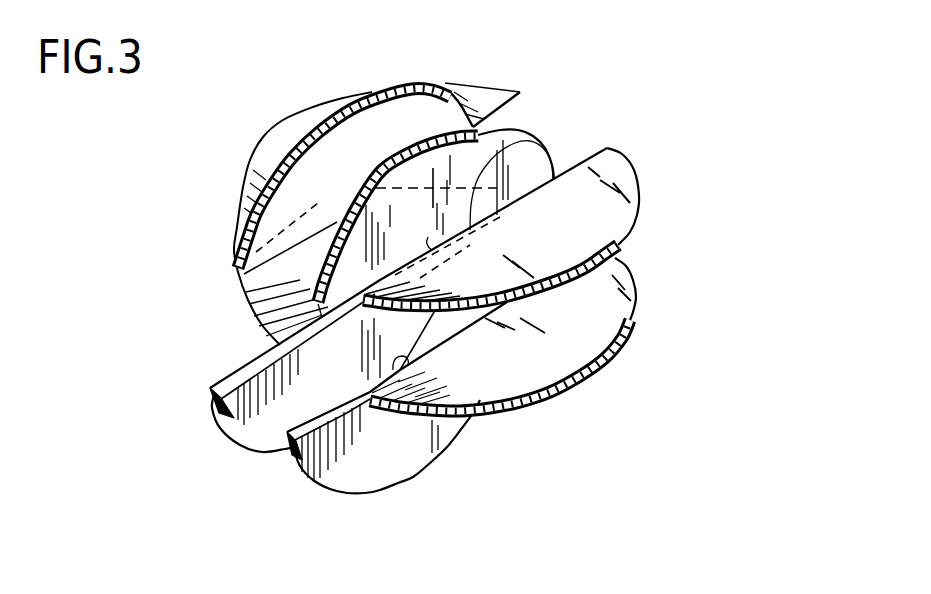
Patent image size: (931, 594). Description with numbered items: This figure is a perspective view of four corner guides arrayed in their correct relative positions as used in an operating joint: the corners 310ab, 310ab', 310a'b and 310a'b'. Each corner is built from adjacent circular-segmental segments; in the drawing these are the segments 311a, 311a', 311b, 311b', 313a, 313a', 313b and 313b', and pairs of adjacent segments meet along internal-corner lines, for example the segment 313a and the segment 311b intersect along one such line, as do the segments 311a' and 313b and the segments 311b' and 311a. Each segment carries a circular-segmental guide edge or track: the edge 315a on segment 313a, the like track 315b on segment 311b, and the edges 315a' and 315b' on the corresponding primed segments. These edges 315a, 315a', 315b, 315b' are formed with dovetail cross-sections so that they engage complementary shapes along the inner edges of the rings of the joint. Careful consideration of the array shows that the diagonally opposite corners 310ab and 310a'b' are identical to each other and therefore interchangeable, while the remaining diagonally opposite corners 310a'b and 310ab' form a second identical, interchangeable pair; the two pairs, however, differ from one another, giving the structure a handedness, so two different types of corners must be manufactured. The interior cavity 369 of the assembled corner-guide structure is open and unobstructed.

The corner 310ab is at (235, 258).
The corner 310ab' is at (231, 439).
The corner 310a'b is at (565, 175).
The corner 310a'b' is at (634, 264).
The segment 311a is at (386, 459).
The segment 311a' is at (216, 424).
The segment 311b is at (597, 240).
The segment 311b' is at (542, 319).
The segment 313a is at (436, 222).
The segment 313a' is at (310, 217).
The segment 313b is at (492, 87).
The segment 313b' is at (494, 244).
The circular-segmental guide edge 315a is at (367, 351).
The guide edge 315a' is at (307, 285).
The track 315b is at (529, 95).
The guide edge 315b' is at (525, 328).
The interior cavity 369 is at (240, 313).